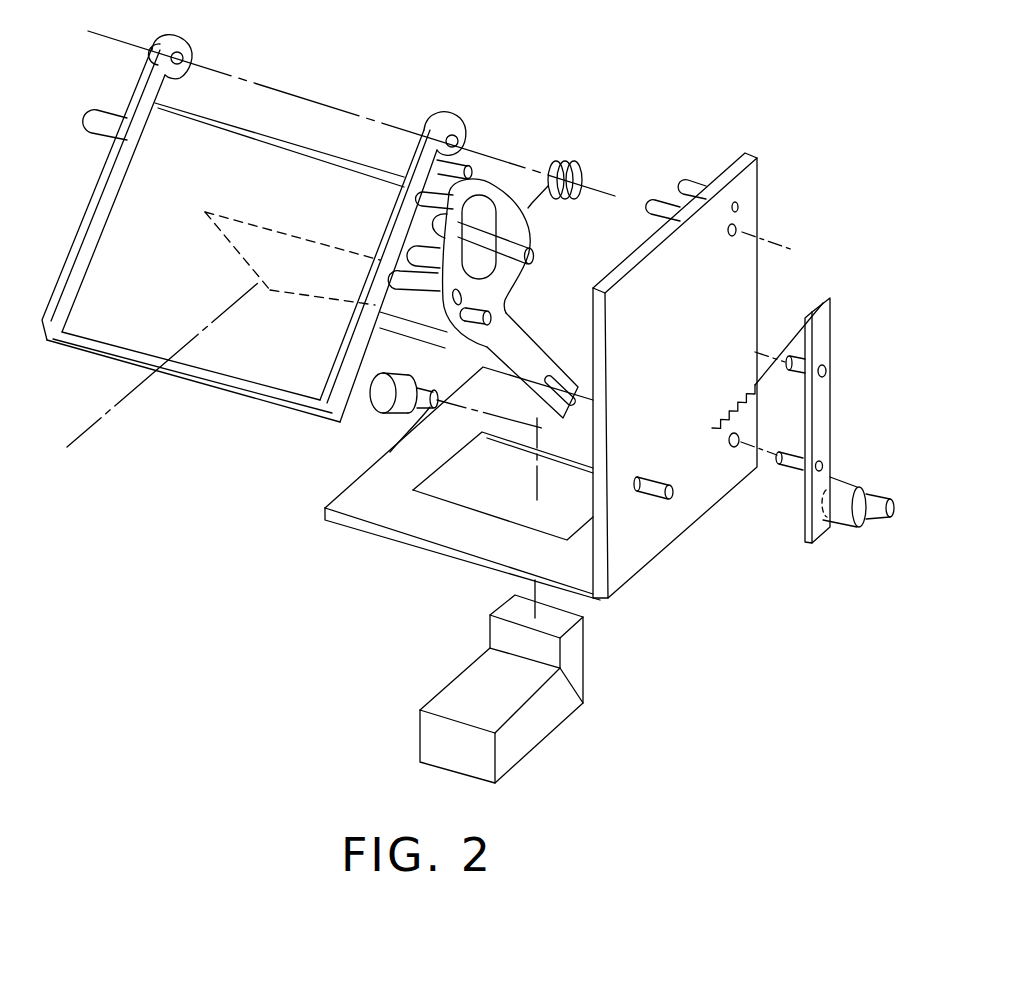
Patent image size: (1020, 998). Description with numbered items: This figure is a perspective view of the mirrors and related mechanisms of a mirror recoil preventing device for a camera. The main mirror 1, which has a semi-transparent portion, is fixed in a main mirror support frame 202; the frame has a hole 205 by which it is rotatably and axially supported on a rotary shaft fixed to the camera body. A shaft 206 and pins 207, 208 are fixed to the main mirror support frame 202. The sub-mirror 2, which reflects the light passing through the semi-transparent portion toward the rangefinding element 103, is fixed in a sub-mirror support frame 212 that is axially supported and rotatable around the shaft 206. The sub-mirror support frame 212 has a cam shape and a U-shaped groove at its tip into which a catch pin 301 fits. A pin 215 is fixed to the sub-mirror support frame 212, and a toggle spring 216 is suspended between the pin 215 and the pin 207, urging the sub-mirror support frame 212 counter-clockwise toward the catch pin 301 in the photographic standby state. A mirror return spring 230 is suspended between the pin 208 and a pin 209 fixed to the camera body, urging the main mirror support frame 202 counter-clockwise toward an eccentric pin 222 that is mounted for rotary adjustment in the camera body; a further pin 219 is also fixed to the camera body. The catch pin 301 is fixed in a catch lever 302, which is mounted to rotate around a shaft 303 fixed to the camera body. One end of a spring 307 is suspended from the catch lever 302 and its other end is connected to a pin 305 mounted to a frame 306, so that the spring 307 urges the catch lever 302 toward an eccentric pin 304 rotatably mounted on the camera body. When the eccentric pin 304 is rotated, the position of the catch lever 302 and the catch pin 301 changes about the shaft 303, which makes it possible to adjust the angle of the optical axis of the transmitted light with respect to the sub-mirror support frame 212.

The main mirror 1 is at (231, 347).
The sub-mirror 2 is at (318, 292).
The rangefinding element 103 is at (575, 698).
The main mirror support frame 202 is at (331, 414).
The hole 205 is at (460, 128).
The shaft 206 is at (423, 290).
The pin 207 is at (423, 193).
The pin 208 is at (463, 170).
The pin 209 is at (692, 175).
The sub-mirror support frame 212 is at (528, 370).
The pin 215 is at (490, 314).
The toggle spring 216 is at (527, 235).
The pin 219 is at (531, 251).
The eccentric pin 222 is at (383, 403).
The mirror return spring 230 is at (607, 163).
The catch pin 301 is at (788, 465).
The catch lever 302 is at (818, 338).
The shaft 303 is at (792, 375).
The eccentric pin 304 is at (850, 490).
The pin 305 is at (663, 503).
The frame 306 is at (617, 573).
The spring 307 is at (790, 340).